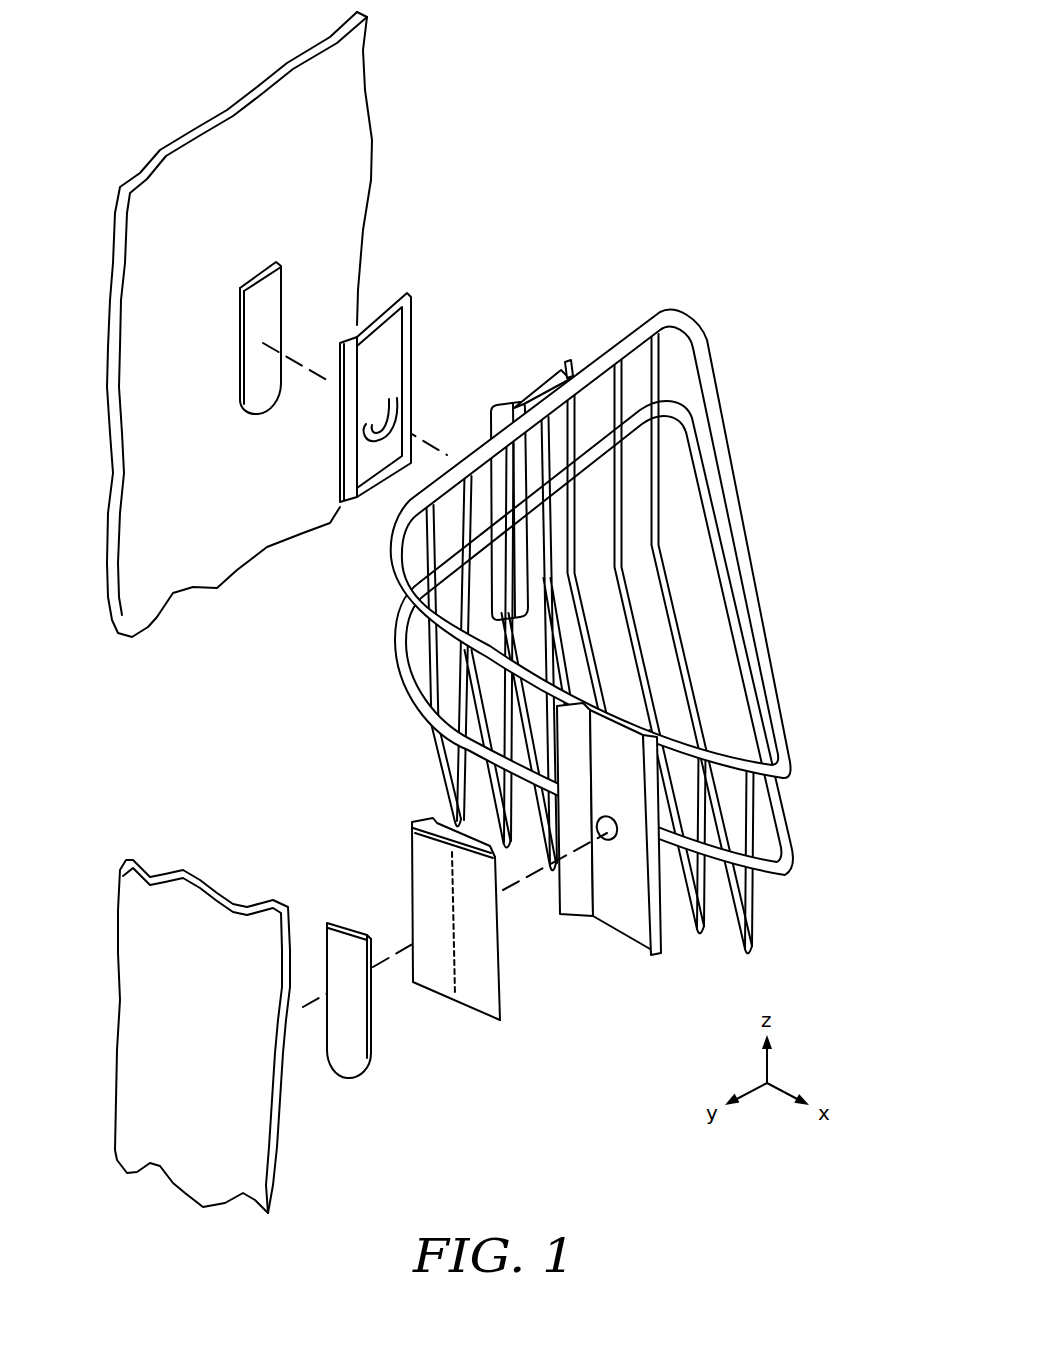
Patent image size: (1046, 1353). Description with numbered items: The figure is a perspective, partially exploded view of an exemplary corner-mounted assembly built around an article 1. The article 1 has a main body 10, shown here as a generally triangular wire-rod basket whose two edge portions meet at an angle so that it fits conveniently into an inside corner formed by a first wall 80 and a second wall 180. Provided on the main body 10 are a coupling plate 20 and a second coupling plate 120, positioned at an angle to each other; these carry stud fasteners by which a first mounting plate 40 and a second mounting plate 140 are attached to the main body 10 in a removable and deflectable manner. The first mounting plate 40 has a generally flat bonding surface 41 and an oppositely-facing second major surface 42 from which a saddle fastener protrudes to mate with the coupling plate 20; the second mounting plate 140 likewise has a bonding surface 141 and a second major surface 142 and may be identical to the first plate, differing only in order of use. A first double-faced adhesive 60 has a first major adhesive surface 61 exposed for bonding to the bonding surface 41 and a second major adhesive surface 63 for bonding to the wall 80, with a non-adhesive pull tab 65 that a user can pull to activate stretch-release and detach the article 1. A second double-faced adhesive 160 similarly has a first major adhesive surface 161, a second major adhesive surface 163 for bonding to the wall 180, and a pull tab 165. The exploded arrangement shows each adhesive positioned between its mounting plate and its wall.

The article 1 is at (638, 178).
The main body 10 is at (392, 587).
The coupling plate 20 is at (623, 937).
The first mounting plate 40 is at (427, 820).
The bonding surface 41 is at (413, 860).
The second major surface 42 is at (503, 928).
The first double-faced adhesive 60 is at (327, 923).
The first major adhesive surface 61 is at (370, 1000).
The second major adhesive surface 63 is at (353, 1033).
The pull tab 65 is at (345, 1063).
The first wall 80 is at (145, 930).
The coupling plate 120 is at (550, 383).
The second mounting plate 140 is at (390, 297).
The bonding surface 141 is at (341, 462).
The second major surface 142 is at (397, 337).
The second double-faced adhesive 160 is at (262, 272).
The first major adhesive surface 161 is at (267, 310).
The second major adhesive surface 163 is at (240, 372).
The pull tab 165 is at (255, 403).
The second wall 180 is at (337, 105).